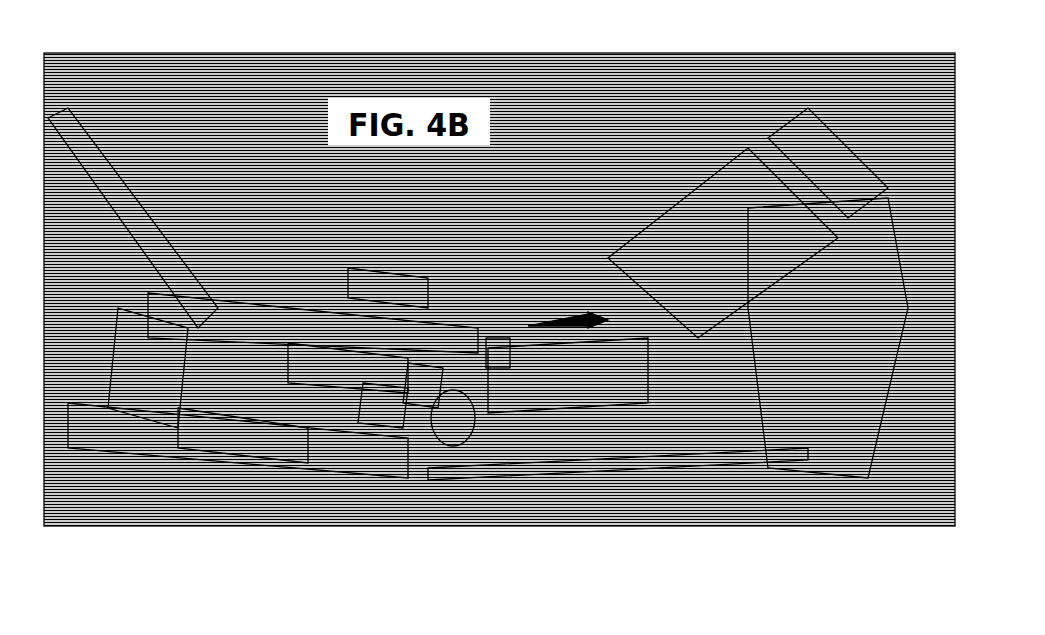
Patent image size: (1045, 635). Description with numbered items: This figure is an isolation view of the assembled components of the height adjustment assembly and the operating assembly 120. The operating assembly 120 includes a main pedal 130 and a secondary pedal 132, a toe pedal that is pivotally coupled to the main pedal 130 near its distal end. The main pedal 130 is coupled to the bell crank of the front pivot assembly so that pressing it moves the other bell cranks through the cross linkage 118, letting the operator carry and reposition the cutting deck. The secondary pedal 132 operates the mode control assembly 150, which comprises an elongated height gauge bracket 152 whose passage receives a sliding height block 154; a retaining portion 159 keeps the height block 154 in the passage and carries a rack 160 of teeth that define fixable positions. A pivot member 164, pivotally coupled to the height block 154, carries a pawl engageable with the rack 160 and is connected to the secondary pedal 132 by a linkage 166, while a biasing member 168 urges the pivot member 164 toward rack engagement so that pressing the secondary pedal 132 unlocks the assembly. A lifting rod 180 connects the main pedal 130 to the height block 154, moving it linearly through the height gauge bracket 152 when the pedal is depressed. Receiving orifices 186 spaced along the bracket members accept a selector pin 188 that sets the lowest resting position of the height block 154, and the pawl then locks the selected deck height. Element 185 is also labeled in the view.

The cross linkage 118 is at (70, 170).
The operating assembly 120 is at (857, 345).
The main pedal 130 is at (745, 205).
The secondary pedal 132 is at (780, 130).
The mode control assembly 150 is at (357, 245).
The height gauge bracket 152 is at (262, 452).
The height block 154 is at (378, 400).
The retaining portion 159 is at (490, 345).
The rack 160 is at (335, 362).
The pivot member 164 is at (445, 425).
The linkage 166 is at (720, 462).
The biasing member 168 is at (415, 378).
The lifting rod 180 is at (512, 383).
The rail segment 185 is at (372, 272).
The receiving orifices 186 is at (212, 430).
The selector pin 188 is at (148, 400).